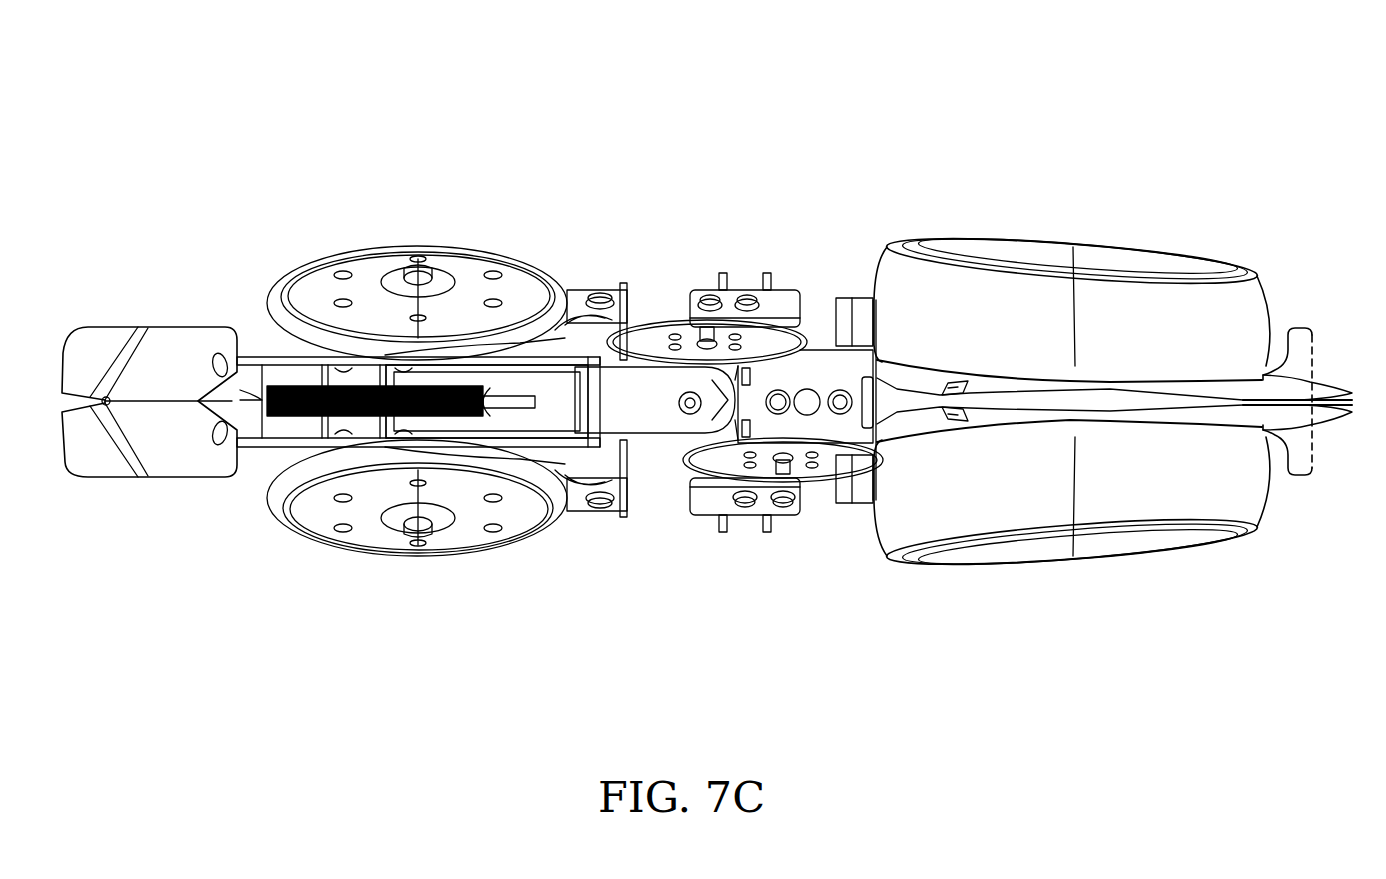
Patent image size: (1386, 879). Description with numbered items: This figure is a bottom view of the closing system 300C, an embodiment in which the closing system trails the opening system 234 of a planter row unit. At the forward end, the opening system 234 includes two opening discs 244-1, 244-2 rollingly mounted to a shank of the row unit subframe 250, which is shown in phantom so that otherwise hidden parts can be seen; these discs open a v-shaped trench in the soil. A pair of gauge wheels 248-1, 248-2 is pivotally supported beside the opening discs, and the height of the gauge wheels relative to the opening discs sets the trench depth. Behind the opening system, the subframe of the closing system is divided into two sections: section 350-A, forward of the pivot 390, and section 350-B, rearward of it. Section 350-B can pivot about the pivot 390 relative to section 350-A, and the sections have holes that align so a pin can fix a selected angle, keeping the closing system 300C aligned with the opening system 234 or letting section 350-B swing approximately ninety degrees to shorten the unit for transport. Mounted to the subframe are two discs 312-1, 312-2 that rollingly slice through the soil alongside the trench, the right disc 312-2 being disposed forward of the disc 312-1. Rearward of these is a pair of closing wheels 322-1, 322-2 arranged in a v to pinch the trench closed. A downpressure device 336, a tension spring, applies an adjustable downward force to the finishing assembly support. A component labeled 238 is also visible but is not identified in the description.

The closing system 300C is at (510, 92).
The furrow closing shoe 238 is at (180, 345).
The closing wheel 322-2 is at (375, 262).
The closing wheel 322-1 is at (367, 537).
The downpressure device 336 is at (296, 418).
The subframe section 350-B is at (628, 390).
The right disc 312-2 is at (665, 327).
The subframe section 350-A is at (808, 367).
The pivot 390 is at (688, 415).
The disc 312-1 is at (830, 455).
The gauge wheel 248-2 is at (1157, 262).
The gauge wheel 248-1 is at (1157, 537).
The row unit subframe 250 is at (1306, 330).
The opening disc 244-2 is at (1292, 388).
The opening disc 244-1 is at (1302, 412).
The opening system 234 is at (1058, 594).